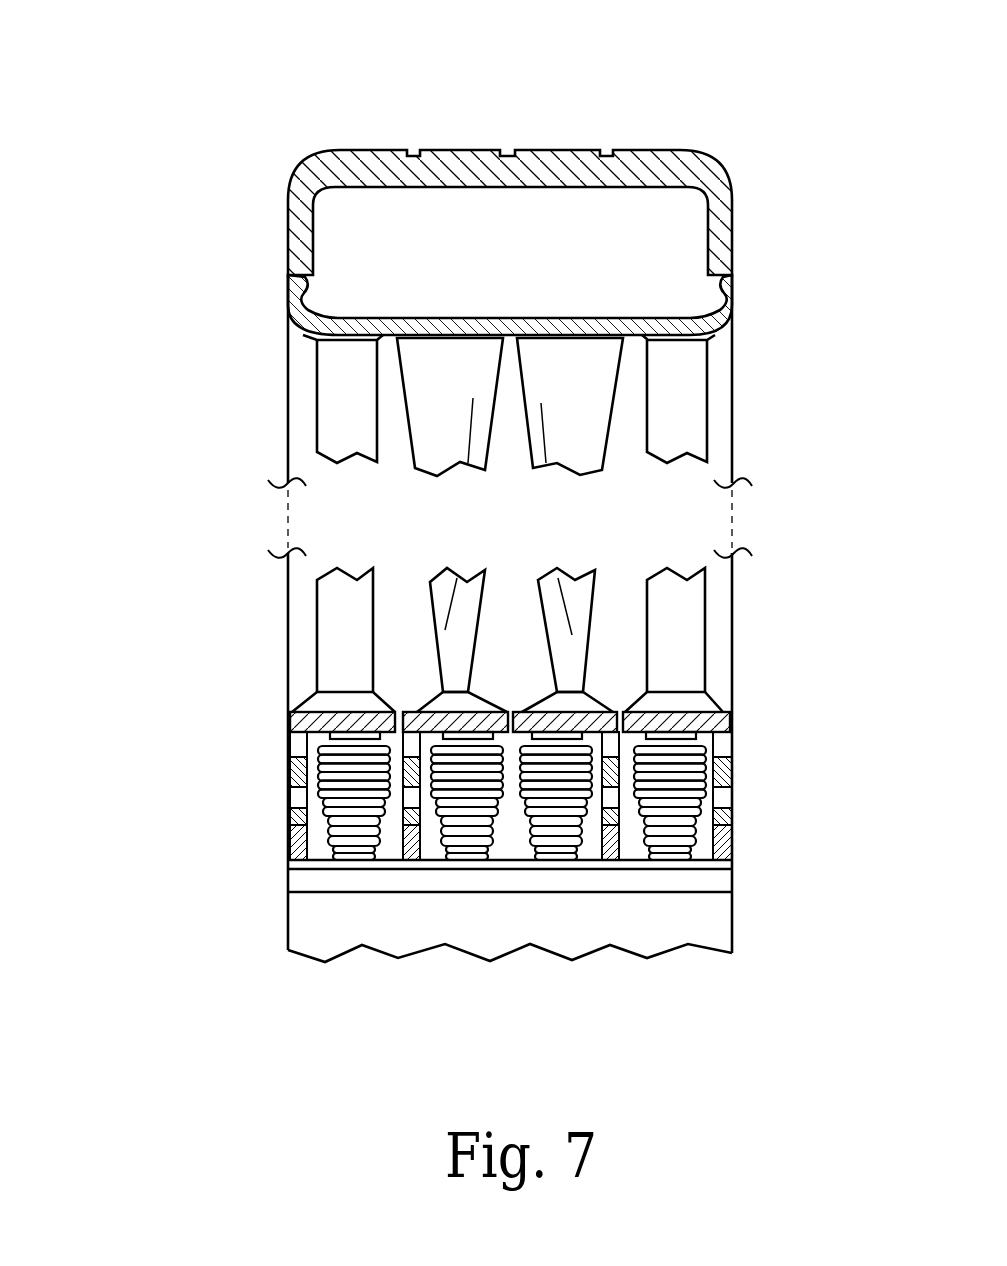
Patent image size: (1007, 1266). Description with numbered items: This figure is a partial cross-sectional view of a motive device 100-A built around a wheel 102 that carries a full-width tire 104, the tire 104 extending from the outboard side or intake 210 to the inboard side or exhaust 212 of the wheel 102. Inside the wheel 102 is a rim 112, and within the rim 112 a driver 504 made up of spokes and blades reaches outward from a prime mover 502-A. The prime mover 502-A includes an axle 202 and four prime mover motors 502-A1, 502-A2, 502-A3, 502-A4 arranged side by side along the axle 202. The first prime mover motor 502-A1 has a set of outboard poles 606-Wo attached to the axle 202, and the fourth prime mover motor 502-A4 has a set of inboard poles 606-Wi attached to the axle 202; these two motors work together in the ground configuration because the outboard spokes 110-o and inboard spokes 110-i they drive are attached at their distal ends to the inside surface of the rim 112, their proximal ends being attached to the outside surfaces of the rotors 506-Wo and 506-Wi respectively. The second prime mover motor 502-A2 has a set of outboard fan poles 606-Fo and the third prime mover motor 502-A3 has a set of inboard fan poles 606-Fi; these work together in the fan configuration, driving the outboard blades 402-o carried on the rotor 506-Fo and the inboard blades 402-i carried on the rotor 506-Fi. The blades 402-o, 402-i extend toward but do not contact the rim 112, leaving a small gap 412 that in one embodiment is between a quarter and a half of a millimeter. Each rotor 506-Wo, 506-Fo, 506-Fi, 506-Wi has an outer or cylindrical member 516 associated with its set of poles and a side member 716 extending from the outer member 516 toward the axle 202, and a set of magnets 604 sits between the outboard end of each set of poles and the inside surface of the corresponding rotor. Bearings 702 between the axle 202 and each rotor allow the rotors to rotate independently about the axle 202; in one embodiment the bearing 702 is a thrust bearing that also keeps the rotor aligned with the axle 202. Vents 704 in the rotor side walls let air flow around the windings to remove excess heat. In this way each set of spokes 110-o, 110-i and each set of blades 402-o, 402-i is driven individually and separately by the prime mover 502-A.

The motive device 100-A is at (224, 63).
The full-width tire 104 is at (568, 150).
The rim 112 is at (732, 282).
The wheel 102 is at (732, 342).
The outboard side 210 is at (288, 425).
The inboard side 212 is at (732, 425).
The gap 412 is at (433, 338).
The driver 504 is at (142, 508).
The outboard blades 402-o is at (472, 470).
The inboard blades 402-i is at (573, 572).
The outboard fan rotor 506-Fo is at (416, 710).
The inboard fan rotor 506-Fi is at (523, 710).
The outboard spokes 110-o is at (317, 625).
The inboard spokes 110-i is at (707, 625).
The outer cylindrical member 516 is at (293, 712).
The outboard wheel rotor 506-Wo is at (288, 797).
The inboard wheel rotor 506-Wi is at (732, 725).
The outboard poles 606-Wo is at (318, 772).
The outboard fan poles 606-Fo is at (468, 862).
The inboard fan poles 606-Fi is at (550, 862).
The inboard poles 606-Wi is at (693, 848).
The magnets 604 is at (732, 760).
The side member 716 is at (732, 773).
The vents 704 is at (732, 797).
The bearing 702 is at (288, 850).
The axle 202 is at (288, 915).
The prime mover 502-A is at (142, 780).
The first prime mover motor 502-A1 is at (355, 913).
The second prime mover motor 502-A2 is at (468, 958).
The third prime mover motor 502-A3 is at (557, 958).
The fourth prime mover motor 502-A4 is at (672, 913).